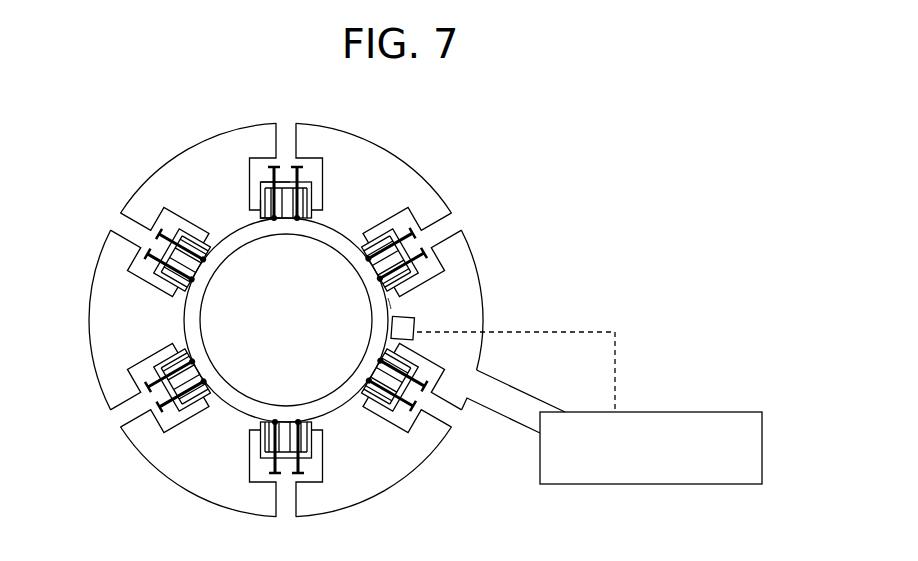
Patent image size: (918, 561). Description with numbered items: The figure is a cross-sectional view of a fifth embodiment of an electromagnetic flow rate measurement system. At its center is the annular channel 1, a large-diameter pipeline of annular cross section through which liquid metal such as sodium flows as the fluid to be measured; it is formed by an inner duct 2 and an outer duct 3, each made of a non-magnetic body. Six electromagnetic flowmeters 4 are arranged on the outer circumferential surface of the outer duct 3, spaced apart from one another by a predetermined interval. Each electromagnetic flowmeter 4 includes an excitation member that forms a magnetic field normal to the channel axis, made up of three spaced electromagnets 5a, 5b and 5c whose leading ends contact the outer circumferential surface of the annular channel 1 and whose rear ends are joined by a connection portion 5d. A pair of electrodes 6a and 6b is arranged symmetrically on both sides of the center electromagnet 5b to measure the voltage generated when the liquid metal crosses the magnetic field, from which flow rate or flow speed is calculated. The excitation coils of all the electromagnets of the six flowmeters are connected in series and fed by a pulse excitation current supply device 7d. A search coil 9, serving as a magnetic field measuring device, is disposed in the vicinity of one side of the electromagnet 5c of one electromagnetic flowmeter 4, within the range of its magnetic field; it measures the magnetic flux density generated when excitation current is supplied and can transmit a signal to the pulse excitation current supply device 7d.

The annular channel 1 is at (335, 400).
The inner duct 2 is at (332, 246).
The outer duct 3 is at (390, 303).
The electromagnetic flowmeter 4 is at (241, 149).
The electromagnet 5a is at (310, 217).
The center electromagnet 5b is at (287, 207).
The electromagnet 5c is at (262, 215).
The connection portion 5d is at (267, 185).
The electrode 6a is at (272, 197).
The electrode 6b is at (302, 173).
The pulse excitation current supply device 7d is at (652, 410).
The search coil 9 is at (417, 326).